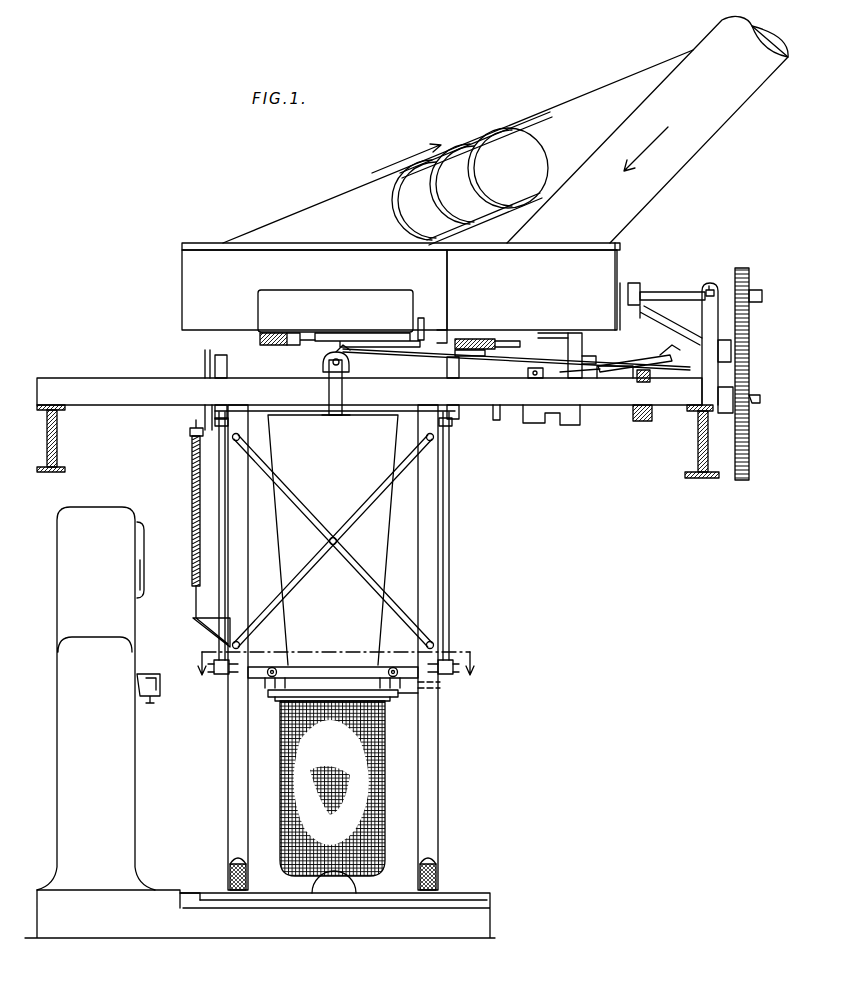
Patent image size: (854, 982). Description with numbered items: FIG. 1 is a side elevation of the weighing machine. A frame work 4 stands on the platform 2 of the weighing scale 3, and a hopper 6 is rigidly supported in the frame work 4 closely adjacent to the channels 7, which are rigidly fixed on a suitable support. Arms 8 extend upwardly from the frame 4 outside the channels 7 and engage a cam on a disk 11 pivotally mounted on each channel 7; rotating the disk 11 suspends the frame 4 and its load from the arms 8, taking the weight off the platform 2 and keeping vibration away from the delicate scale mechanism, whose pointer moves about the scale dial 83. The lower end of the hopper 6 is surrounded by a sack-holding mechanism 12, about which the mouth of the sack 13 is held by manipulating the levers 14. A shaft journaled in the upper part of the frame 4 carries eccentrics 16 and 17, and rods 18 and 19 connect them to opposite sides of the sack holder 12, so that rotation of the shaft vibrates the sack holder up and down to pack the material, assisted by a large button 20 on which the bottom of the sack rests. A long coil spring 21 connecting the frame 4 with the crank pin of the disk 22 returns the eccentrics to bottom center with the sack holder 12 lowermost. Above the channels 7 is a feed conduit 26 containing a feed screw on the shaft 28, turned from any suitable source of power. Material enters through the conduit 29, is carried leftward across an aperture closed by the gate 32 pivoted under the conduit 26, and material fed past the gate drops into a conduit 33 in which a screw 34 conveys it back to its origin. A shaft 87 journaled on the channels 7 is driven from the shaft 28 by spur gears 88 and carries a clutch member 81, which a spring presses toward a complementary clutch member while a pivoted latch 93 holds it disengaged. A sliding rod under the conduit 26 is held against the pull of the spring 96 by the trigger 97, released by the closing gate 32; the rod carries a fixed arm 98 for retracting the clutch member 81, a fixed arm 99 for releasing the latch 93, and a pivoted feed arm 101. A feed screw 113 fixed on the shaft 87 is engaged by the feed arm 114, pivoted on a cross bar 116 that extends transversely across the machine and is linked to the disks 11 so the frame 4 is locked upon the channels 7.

The platform 2 is at (468, 892).
The weighing scale 3 is at (98, 698).
The frame work 4 is at (440, 746).
The hopper 6 is at (338, 485).
The channels 7 is at (120, 400).
The arms 8 is at (328, 392).
The disk 11 is at (322, 371).
The sack-holding mechanism 12 is at (404, 699).
The sack 13 is at (390, 727).
The levers 14 is at (440, 688).
The eccentric 16 is at (237, 377).
The eccentric 17 is at (444, 372).
The rod 18 is at (218, 475).
The rod 19 is at (452, 477).
The button 20 is at (360, 887).
The coil spring 21 is at (192, 499).
The disk 22 is at (195, 420).
The feed conduit 26 is at (541, 295).
The shaft 28 is at (662, 293).
The conduit 29 is at (628, 200).
The gate 32 is at (287, 348).
The conduit 33 is at (322, 212).
The screw 34 is at (468, 157).
The clutch member 81 is at (500, 416).
The scale dial 83 is at (145, 550).
The shaft 87 is at (758, 395).
The spur gears 88 is at (750, 312).
The latch 93 is at (516, 378).
The spring 96 is at (468, 356).
The trigger 97 is at (418, 352).
The fixed arm 98 is at (495, 350).
The fixed arm 99 is at (568, 350).
The feed arm 101 is at (582, 352).
The feed screw 113 is at (651, 374).
The feed arm 114 is at (640, 358).
The cross bar 116 is at (611, 378).